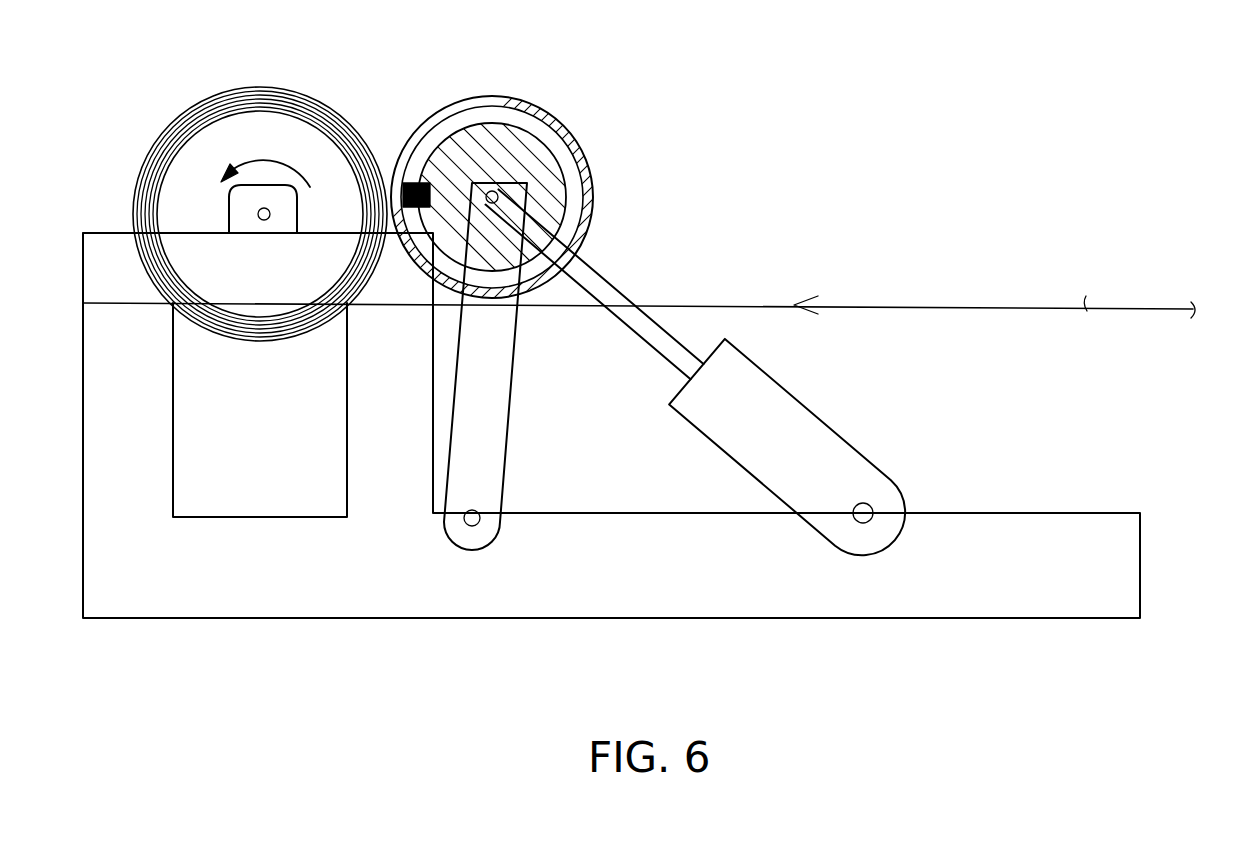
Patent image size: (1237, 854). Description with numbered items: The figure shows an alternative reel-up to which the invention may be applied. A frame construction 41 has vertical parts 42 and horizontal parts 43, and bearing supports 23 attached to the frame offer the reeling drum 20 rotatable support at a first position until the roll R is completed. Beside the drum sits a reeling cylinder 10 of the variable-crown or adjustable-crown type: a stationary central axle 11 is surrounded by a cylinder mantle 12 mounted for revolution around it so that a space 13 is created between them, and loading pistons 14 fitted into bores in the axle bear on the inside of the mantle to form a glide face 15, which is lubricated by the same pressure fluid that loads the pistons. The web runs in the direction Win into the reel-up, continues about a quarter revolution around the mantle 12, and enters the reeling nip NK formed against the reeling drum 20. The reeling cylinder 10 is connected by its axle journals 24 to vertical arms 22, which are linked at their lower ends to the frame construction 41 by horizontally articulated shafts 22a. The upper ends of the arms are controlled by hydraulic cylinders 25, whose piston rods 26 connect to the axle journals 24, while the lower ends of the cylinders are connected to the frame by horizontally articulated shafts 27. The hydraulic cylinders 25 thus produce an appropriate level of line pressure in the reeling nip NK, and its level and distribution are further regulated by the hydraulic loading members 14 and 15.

The reeling cylinder 10 is at (601, 174).
The stationary central axle 11 is at (556, 150).
The cylinder mantle 12 is at (587, 177).
The space 13 is at (572, 200).
The loading pistons 14 is at (442, 180).
The glide face 15 is at (360, 172).
The reeling drum 20 is at (260, 176).
The vertical arms 22 is at (495, 430).
The horizontally articulated shafts 22a is at (476, 512).
The bearing supports 23 is at (237, 212).
The axle journals 24 is at (525, 230).
The hydraulic cylinders 25 is at (840, 453).
The piston rods 26 is at (610, 290).
The horizontally articulated shafts 27 is at (871, 508).
The frame construction 41 is at (786, 598).
The vertical parts 42 is at (360, 412).
The horizontal parts 43 is at (106, 250).
The roll winding R is at (225, 105).
The reeling nip NK is at (387, 205).
The web running direction Win is at (639, 284).